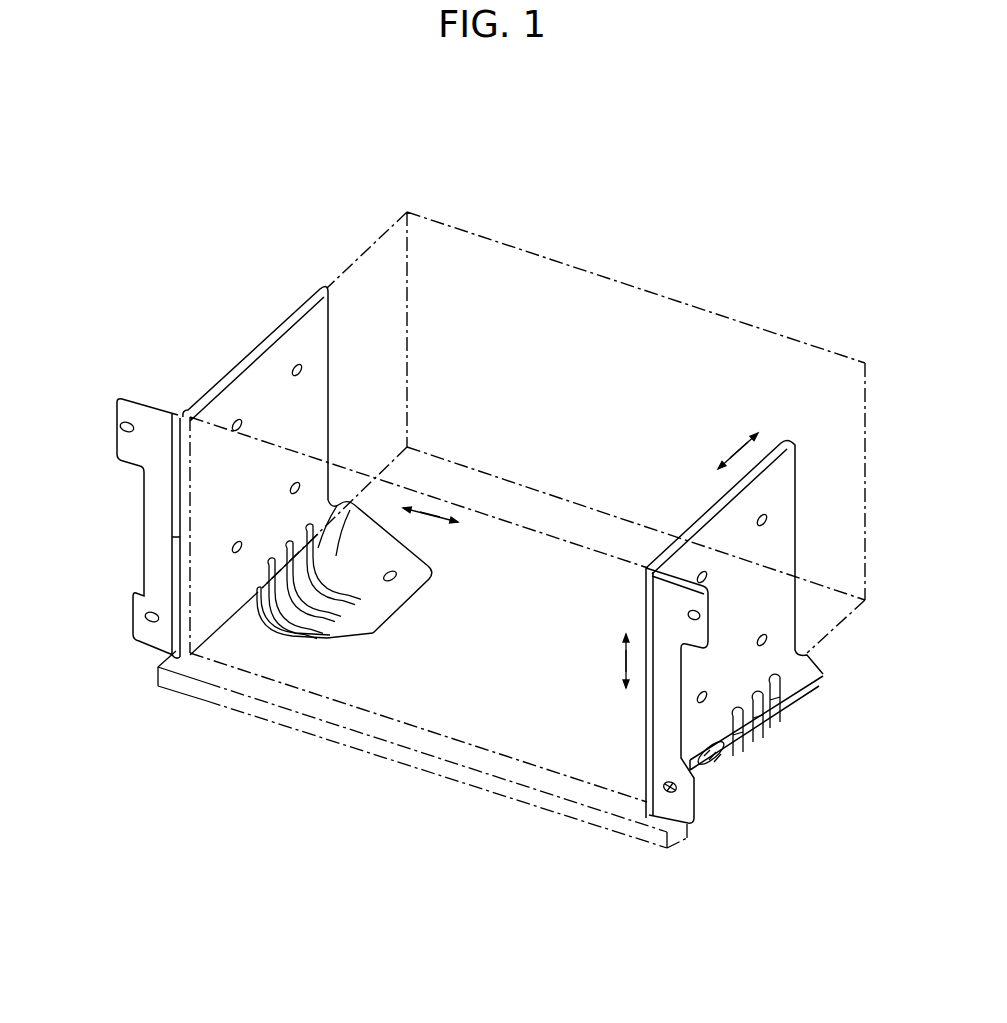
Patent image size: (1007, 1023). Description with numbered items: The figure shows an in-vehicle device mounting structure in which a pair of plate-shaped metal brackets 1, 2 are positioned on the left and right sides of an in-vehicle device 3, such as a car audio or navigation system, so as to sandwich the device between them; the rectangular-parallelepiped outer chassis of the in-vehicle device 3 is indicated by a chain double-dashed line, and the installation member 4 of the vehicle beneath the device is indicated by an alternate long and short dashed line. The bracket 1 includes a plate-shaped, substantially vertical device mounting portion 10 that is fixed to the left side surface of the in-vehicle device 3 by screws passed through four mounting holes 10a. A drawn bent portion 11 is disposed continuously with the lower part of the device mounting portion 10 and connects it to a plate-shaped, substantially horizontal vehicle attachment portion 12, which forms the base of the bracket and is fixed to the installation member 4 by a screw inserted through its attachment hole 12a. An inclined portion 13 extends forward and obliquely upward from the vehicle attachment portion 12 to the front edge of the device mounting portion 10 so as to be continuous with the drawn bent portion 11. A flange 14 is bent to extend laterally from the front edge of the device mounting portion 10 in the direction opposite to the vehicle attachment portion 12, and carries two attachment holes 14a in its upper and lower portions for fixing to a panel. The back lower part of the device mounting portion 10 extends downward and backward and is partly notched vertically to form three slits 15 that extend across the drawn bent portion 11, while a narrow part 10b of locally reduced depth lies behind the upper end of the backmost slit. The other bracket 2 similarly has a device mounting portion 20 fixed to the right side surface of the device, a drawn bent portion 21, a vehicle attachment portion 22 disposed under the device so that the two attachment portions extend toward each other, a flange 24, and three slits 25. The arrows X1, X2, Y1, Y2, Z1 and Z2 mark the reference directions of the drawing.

The bracket 1 is at (157, 403).
The bracket 2 is at (797, 502).
The in-vehicle device 3 is at (668, 297).
The installation member 4 is at (358, 750).
The device mounting portion 10 is at (258, 367).
The mounting holes 10a is at (305, 366).
The narrow part 10b is at (335, 505).
The drawn bent portion 11 is at (355, 540).
The vehicle attachment portion 12 is at (382, 578).
The attachment hole 12a is at (373, 605).
The inclined portion 13 is at (332, 630).
The flange 14 is at (150, 633).
The attachment holes 14a is at (120, 430).
The slits 15 is at (305, 525).
The device mounting portion 20 is at (780, 618).
The drawn bent portion 21 is at (812, 696).
The vehicle attachment portion 22 is at (772, 735).
The flange 24 is at (672, 810).
The slits 25 is at (747, 697).
The direction X1 is at (723, 462).
The direction X2 is at (756, 432).
The direction Y1 is at (414, 506).
The direction Y2 is at (454, 525).
The direction Z1 is at (626, 647).
The direction Z2 is at (626, 685).